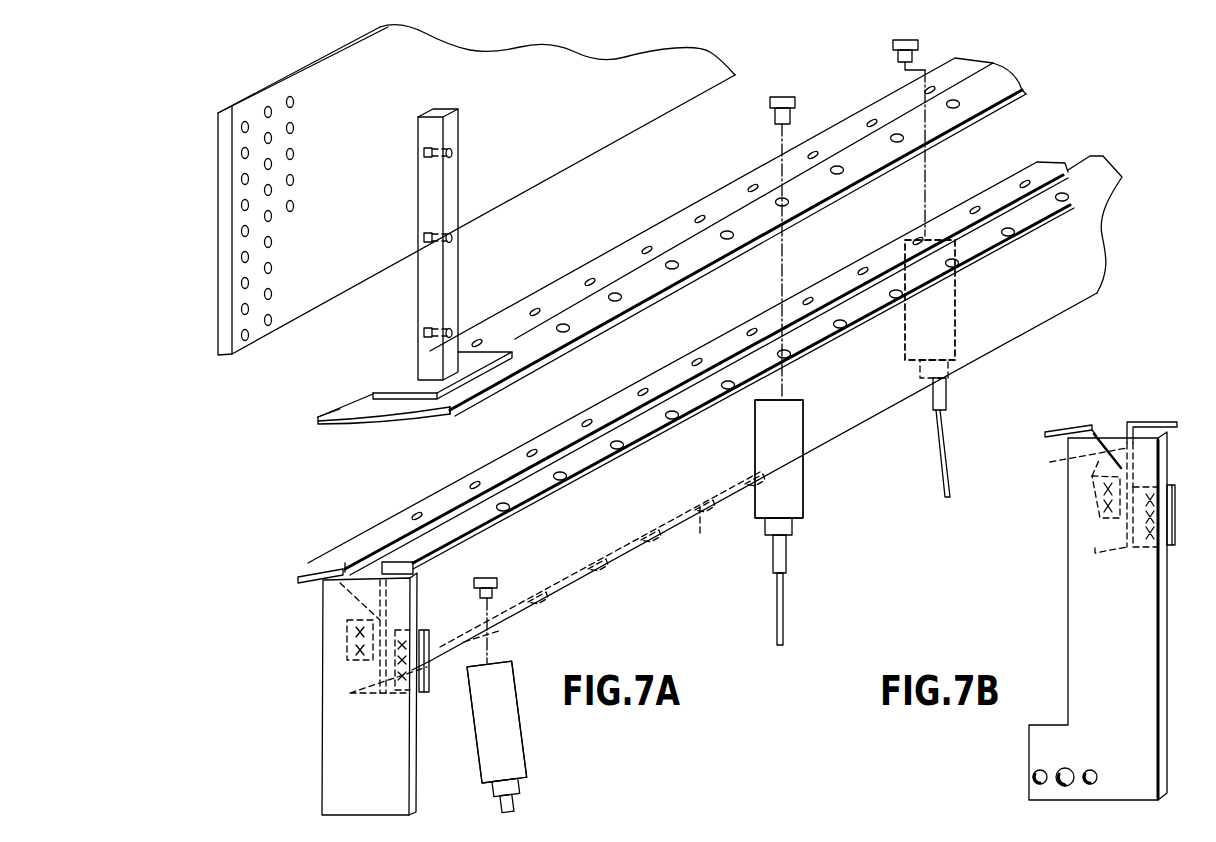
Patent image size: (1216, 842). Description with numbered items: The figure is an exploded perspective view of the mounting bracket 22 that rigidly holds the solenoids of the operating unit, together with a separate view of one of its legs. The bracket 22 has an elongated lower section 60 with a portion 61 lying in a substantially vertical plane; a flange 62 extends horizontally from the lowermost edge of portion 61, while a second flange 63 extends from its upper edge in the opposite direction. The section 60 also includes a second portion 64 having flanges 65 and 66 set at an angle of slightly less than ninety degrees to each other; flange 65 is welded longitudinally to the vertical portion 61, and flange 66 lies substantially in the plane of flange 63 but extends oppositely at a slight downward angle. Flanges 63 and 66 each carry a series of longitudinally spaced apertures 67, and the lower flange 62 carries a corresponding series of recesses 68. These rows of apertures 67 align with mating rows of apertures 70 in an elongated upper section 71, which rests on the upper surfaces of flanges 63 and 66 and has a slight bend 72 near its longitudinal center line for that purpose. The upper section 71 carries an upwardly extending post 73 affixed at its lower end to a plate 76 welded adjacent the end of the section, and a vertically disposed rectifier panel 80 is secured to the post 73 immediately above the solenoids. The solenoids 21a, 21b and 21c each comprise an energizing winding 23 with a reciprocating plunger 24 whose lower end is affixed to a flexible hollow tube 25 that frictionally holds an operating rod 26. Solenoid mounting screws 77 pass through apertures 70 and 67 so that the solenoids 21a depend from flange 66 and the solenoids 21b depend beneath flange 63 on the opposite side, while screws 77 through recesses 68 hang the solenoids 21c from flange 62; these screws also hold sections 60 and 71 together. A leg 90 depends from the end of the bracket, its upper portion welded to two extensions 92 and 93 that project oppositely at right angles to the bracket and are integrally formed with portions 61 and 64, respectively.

In FIG. 7A, the mounting bracket 22 is at (298, 447).
In FIG. 7A, the elongated panel 80 is at (218, 180).
In FIG. 7A, the post 73 is at (455, 264).
In FIG. 7A, the plate 76 is at (393, 392).
In FIG. 7A, the bend 72 is at (383, 413).
In FIG. 7A, the upper section 71 is at (318, 412).
In FIG. 7A, the apertures 70 is at (615, 292).
In FIG. 7A, the solenoid mounting screws 77 is at (890, 48).
In FIG. 7A, the apertures 67 is at (560, 473).
In FIG. 7A, the second portion 64 is at (345, 540).
In FIG. 7B, the second portion 64 is at (1097, 431).
In FIG. 7A, the second flange 63 is at (427, 562).
In FIG. 7B, the second flange 63 is at (1152, 421).
In FIG. 7A, the flange 66 is at (302, 575).
In FIG. 7B, the flange 66 is at (1070, 428).
In FIG. 7A, the portion 61 is at (600, 530).
In FIG. 7B, the portion 61 is at (1052, 462).
In FIG. 7A, the lower section 60 is at (575, 594).
In FIG. 7A, the recesses 68 is at (665, 538).
In FIG. 7A, the solenoids 21a is at (968, 344).
In FIG. 7A, the solenoids 21b is at (815, 511).
In FIG. 7A, the solenoids 21c is at (538, 724).
In FIG. 7A, the energizing winding 23 is at (803, 491).
In FIG. 7A, the plunger 24 is at (793, 530).
In FIG. 7A, the hollow tube 25 is at (786, 561).
In FIG. 7A, the operating rod 26 is at (783, 615).
In FIG. 7A, the leg 90 is at (330, 750).
In FIG. 7B, the leg 90 is at (1082, 630).
In FIG. 7A, the extension 92 is at (429, 680).
In FIG. 7B, the extension 92 is at (1175, 505).
In FIG. 7A, the extension 93 is at (347, 636).
In FIG. 7B, the extension 93 is at (1092, 487).
In FIG. 7A, the flange 65 is at (355, 660).
In FIG. 7B, the flange 65 is at (1092, 500).
In FIG. 7A, the flange 62 is at (350, 693).
In FIG. 7B, the flange 62 is at (1095, 553).